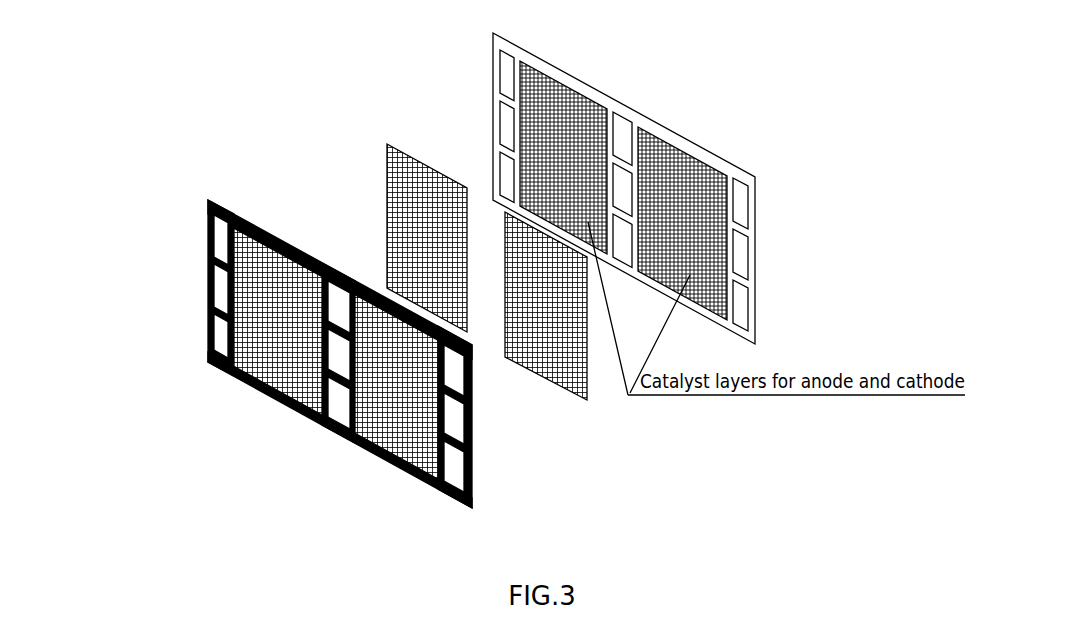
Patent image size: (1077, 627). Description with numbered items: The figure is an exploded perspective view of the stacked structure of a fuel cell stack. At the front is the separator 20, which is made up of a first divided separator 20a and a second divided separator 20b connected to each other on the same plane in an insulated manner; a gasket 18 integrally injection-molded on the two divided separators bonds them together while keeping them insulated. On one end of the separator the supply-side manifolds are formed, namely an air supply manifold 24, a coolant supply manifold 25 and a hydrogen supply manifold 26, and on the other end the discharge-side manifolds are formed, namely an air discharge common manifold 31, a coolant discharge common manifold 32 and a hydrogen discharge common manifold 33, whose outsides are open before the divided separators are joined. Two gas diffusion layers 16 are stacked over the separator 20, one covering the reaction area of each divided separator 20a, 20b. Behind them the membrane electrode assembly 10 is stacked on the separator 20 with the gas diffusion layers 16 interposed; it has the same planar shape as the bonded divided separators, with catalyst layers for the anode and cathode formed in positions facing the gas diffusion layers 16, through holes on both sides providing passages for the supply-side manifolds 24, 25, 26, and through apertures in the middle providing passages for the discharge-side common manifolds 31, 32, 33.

The membrane electrode assembly 10 is at (667, 126).
The gas diffusion layer 16 is at (422, 177).
The gasket 18 is at (208, 214).
The separator 20 is at (353, 325).
The first divided separator 20a is at (227, 195).
The second divided separator 20b is at (478, 505).
The air supply manifold 24 is at (213, 226).
The coolant supply manifold 25 is at (212, 276).
The hydrogen supply manifold 26 is at (212, 330).
The air discharge common manifold 31 is at (338, 403).
The coolant discharge common manifold 32 is at (313, 350).
The hydrogen discharge common manifold 33 is at (330, 292).